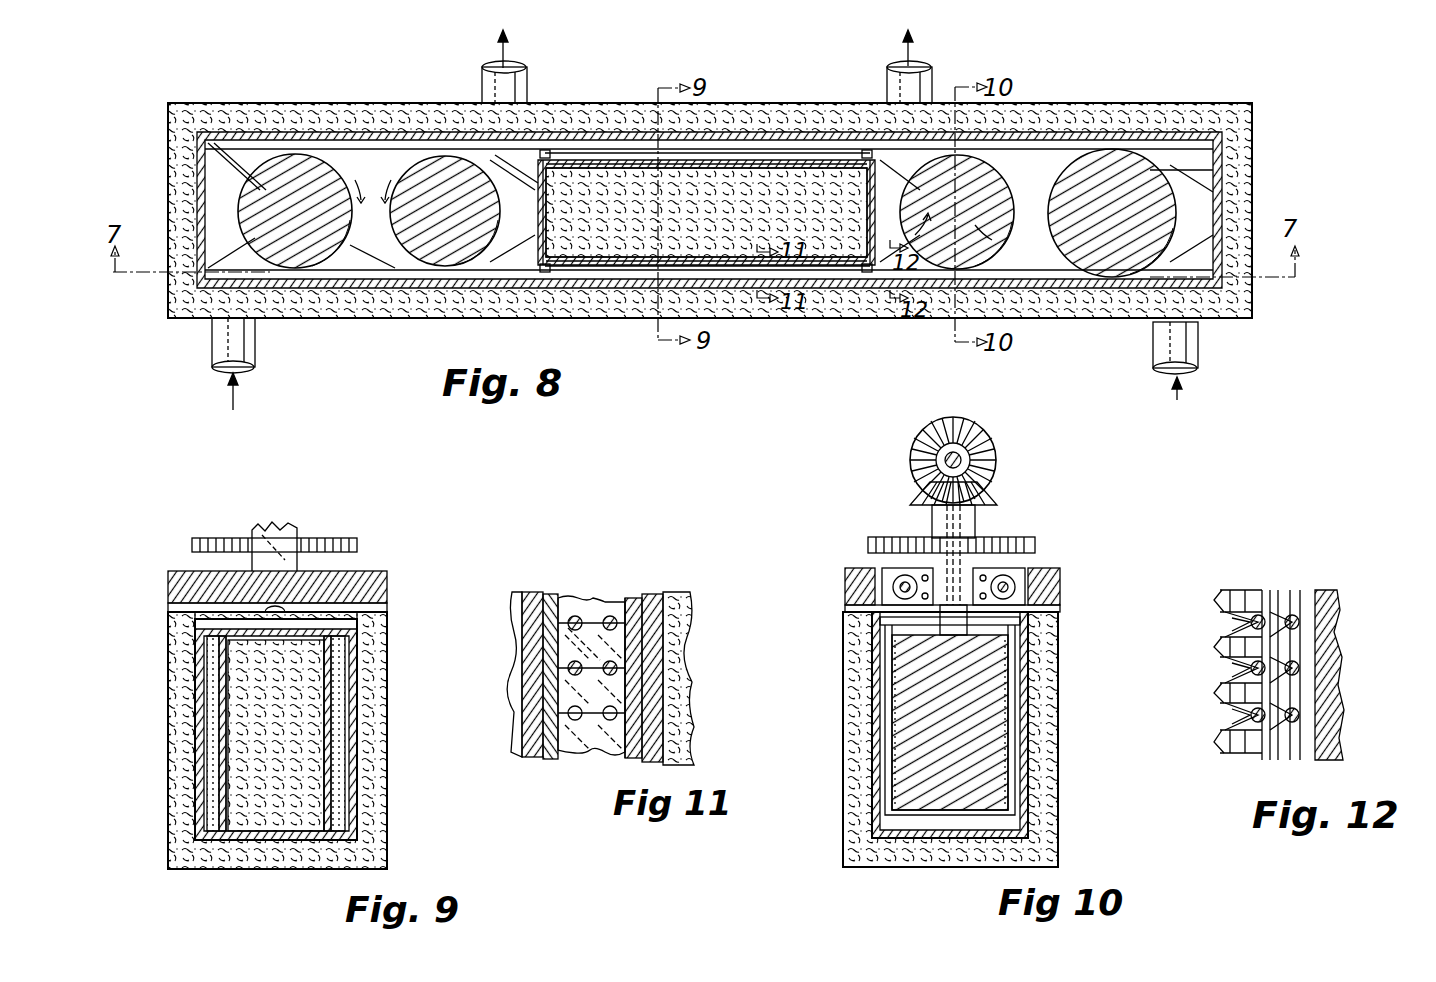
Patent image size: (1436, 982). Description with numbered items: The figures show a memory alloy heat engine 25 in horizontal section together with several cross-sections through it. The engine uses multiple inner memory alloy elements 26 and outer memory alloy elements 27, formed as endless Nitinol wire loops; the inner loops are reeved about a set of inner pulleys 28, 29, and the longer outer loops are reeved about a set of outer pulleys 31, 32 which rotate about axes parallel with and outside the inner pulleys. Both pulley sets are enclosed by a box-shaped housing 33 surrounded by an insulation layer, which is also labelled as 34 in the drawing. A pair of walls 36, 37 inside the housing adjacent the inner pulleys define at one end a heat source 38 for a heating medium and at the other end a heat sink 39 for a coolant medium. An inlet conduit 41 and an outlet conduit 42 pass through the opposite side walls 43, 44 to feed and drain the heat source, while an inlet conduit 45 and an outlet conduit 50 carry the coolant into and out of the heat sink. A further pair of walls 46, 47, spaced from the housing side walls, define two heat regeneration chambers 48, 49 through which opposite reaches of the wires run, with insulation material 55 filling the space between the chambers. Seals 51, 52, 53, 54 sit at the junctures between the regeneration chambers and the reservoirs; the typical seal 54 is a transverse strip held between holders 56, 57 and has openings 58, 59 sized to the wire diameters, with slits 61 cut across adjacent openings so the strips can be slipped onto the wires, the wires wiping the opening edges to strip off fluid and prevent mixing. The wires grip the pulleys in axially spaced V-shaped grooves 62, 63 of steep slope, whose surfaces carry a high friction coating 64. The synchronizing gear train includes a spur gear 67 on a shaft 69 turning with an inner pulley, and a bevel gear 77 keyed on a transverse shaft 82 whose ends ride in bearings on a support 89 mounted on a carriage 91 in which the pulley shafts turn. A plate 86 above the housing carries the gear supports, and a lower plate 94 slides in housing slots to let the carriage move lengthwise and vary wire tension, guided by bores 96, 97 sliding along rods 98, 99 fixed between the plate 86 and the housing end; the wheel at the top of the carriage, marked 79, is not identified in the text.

In FIG. 8, the memory alloy heat engine 25 is at (240, 71).
In FIG. 8, the inner memory alloy elements 26 is at (487, 268).
In FIG. 9, the inner memory alloy elements 26 is at (330, 795).
In FIG. 11, the inner memory alloy elements 26 is at (578, 710).
In FIG. 12, the inner memory alloy elements 26 is at (1272, 750).
In FIG. 8, the outer memory alloy elements 27 is at (673, 203).
In FIG. 9, the outer memory alloy elements 27 is at (340, 775).
In FIG. 11, the outer memory alloy elements 27 is at (606, 710).
In FIG. 12, the outer memory alloy elements 27 is at (1300, 712).
In FIG. 8, the inner pulley 28 is at (405, 166).
In FIG. 8, the inner pulley 29 is at (1007, 168).
In FIG. 10, the inner pulley 29 is at (990, 660).
In FIG. 12, the inner pulley 29 is at (1275, 592).
In FIG. 8, the outer pulley 31 is at (345, 170).
In FIG. 8, the outer pulley 32 is at (1067, 165).
In FIG. 10, the outer pulley 32 is at (1012, 785).
In FIG. 12, the outer pulley 32 is at (1318, 592).
In FIG. 8, the housing 33 is at (792, 122).
In FIG. 8, the insulation 34 is at (1145, 115).
In FIG. 9, the insulation 34 is at (375, 640).
In FIG. 11, the insulation 34 is at (680, 628).
In FIG. 10, the insulation 34 is at (1050, 735).
In FIG. 8, the wall 36 is at (528, 208).
In FIG. 8, the wall 37 is at (895, 196).
In FIG. 8, the heat source 38 is at (1200, 173).
In FIG. 8, the heat sink 39 is at (200, 180).
In FIG. 8, the inlet conduit 41 is at (1199, 361).
In FIG. 8, the outlet conduit 42 is at (933, 80).
In FIG. 8, the side wall 43 is at (432, 289).
In FIG. 9, the side wall 43 is at (352, 665).
In FIG. 11, the side wall 43 is at (655, 598).
In FIG. 10, the side wall 43 is at (1025, 690).
In FIG. 12, the side wall 43 is at (1330, 600).
In FIG. 8, the side wall 44 is at (429, 136).
In FIG. 9, the side wall 44 is at (200, 650).
In FIG. 10, the side wall 44 is at (870, 720).
In FIG. 8, the inlet conduit 45 is at (256, 350).
In FIG. 8, the wall 46 is at (602, 160).
In FIG. 9, the wall 46 is at (212, 700).
In FIG. 8, the wall 47 is at (587, 262).
In FIG. 9, the wall 47 is at (340, 690).
In FIG. 11, the wall 47 is at (525, 640).
In FIG. 8, the heat regeneration chamber 48 is at (638, 140).
In FIG. 9, the heat regeneration chamber 48 is at (213, 815).
In FIG. 8, the heat regeneration chamber 49 is at (632, 277).
In FIG. 9, the heat regeneration chamber 49 is at (340, 820).
In FIG. 8, the outlet conduit 50 is at (531, 81).
In FIG. 8, the seal 51 is at (545, 148).
In FIG. 8, the seal 52 is at (534, 278).
In FIG. 8, the seal 53 is at (867, 150).
In FIG. 8, the seal 54 is at (862, 273).
In FIG. 11, the seal 54 is at (590, 600).
In FIG. 8, the insulation material 55 is at (730, 247).
In FIG. 9, the insulation material 55 is at (310, 742).
In FIG. 11, the holder 56 is at (578, 598).
In FIG. 11, the holder 57 is at (632, 600).
In FIG. 11, the opening 58 is at (575, 720).
In FIG. 11, the opening 59 is at (612, 720).
In FIG. 11, the slit 61 is at (628, 700).
In FIG. 12, the V-shaped groove 62 is at (1300, 628).
In FIG. 12, the V-shaped groove 63 is at (1300, 690).
In FIG. 12, the coating 64 is at (1250, 592).
In FIG. 9, the spur gear 67 is at (335, 538).
In FIG. 10, the spur gear 67 is at (1000, 540).
In FIG. 10, the shaft 69 is at (940, 525).
In FIG. 10, the bevel gear 77 is at (985, 498).
In FIG. 10, the wheel 79 is at (990, 440).
In FIG. 10, the transverse shaft 82 is at (915, 452).
In FIG. 9, the plate 86 is at (387, 575).
In FIG. 10, the support 89 is at (932, 512).
In FIG. 10, the carriage 91 is at (1010, 575).
In FIG. 10, the lower plate 94 is at (1030, 630).
In FIG. 10, the bore 96 is at (890, 575).
In FIG. 10, the bore 97 is at (1020, 585).
In FIG. 10, the rod 98 is at (890, 605).
In FIG. 10, the rod 99 is at (1000, 605).